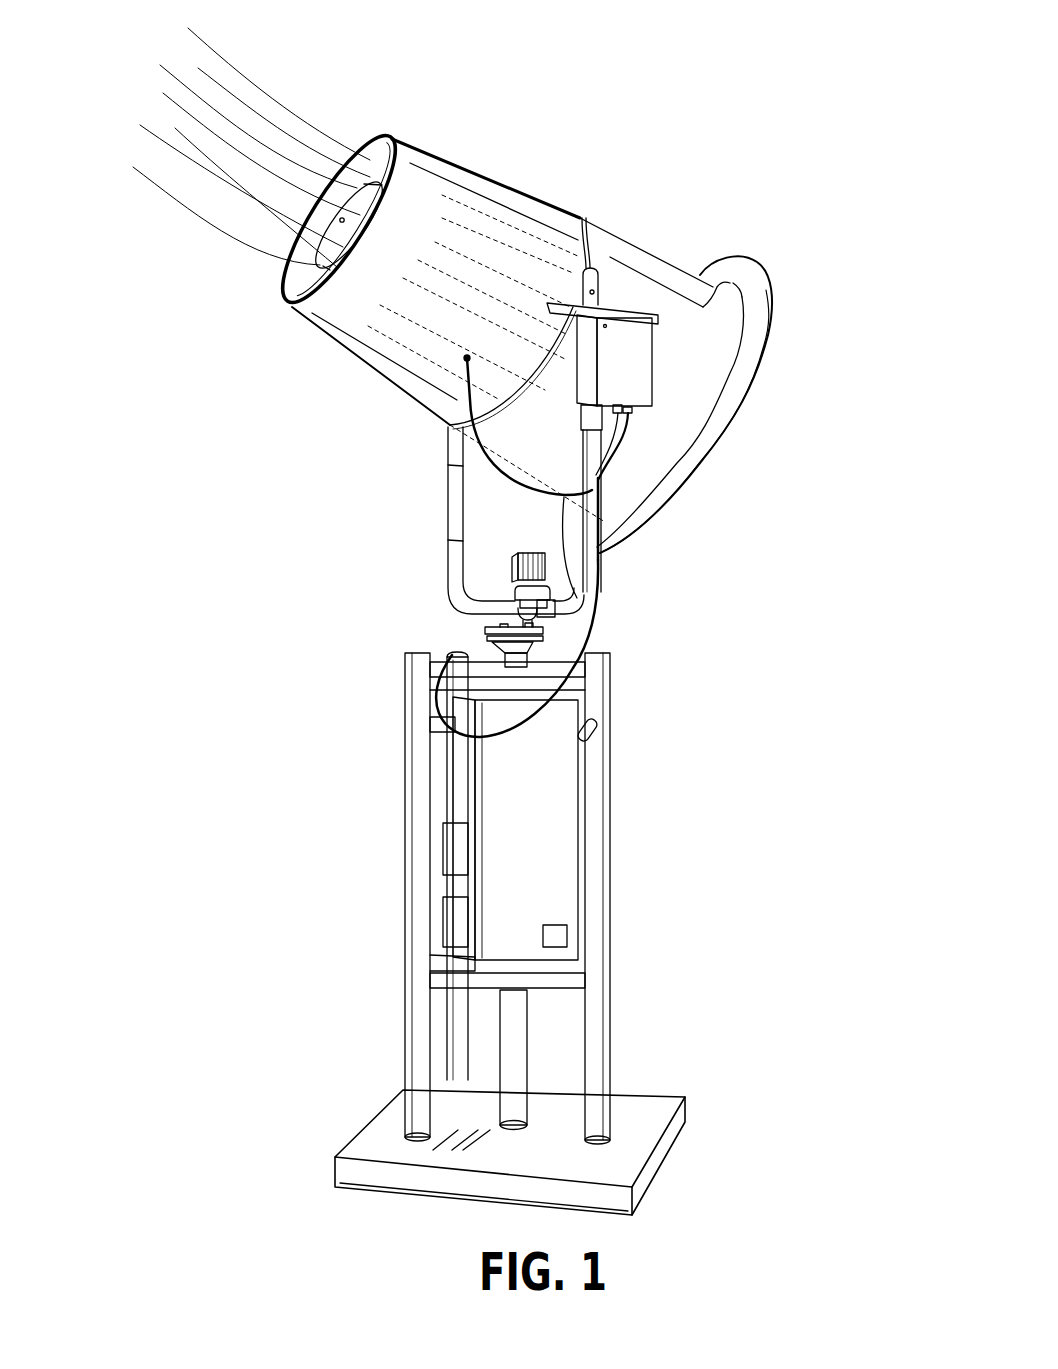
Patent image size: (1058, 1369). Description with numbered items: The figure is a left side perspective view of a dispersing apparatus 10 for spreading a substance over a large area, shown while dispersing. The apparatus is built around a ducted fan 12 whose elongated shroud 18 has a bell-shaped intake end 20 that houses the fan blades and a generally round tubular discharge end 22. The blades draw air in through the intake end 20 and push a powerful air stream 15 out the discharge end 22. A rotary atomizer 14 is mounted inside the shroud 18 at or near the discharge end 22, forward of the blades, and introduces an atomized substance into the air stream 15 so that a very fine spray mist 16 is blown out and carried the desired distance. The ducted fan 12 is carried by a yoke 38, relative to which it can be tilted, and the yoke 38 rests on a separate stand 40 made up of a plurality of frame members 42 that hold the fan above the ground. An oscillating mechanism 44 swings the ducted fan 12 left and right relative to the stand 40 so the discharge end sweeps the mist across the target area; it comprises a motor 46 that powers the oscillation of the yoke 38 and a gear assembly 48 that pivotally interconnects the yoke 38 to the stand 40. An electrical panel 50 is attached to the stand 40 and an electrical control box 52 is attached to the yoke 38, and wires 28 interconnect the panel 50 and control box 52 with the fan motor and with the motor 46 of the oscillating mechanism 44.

The dispersing apparatus 10 is at (236, 476).
The ducted fan 12 is at (467, 163).
The rotary atomizer 14 is at (328, 247).
The air stream 15 is at (452, 318).
The spray mist 16 is at (241, 112).
The shroud 18 is at (527, 223).
The intake end 20 is at (783, 280).
The discharge end 22 is at (400, 123).
The wires 28 is at (470, 478).
The yoke 38 is at (596, 530).
The stand 40 is at (601, 792).
The frame members 42 is at (417, 875).
The oscillating mechanism 44 is at (566, 618).
The motor 46 is at (545, 568).
The gear assembly 48 is at (487, 632).
The electrical panel 50 is at (553, 838).
The electrical control box 52 is at (637, 363).